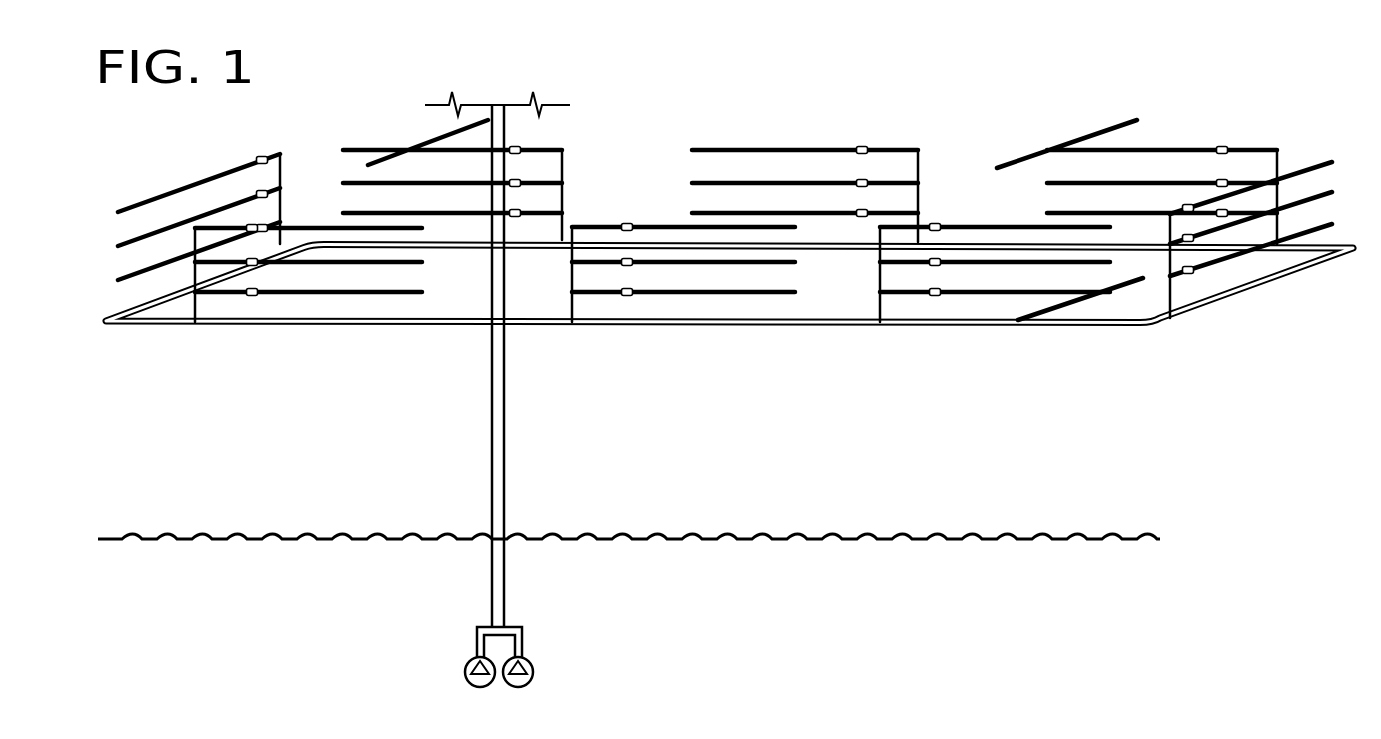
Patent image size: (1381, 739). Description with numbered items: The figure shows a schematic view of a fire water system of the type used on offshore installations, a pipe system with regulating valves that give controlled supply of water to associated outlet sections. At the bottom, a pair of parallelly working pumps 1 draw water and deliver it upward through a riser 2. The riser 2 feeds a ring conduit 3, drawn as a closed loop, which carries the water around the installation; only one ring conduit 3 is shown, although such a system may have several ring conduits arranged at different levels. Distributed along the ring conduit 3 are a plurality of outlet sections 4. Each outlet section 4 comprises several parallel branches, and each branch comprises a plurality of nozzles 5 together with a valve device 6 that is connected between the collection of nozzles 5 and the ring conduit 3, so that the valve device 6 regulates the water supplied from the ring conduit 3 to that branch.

The pumps 1 is at (568, 666).
The riser 2 is at (505, 440).
The ring conduit 3 is at (702, 321).
The outlet sections 4 is at (299, 152).
The nozzles 5 is at (747, 150).
The valve device 6 is at (627, 261).